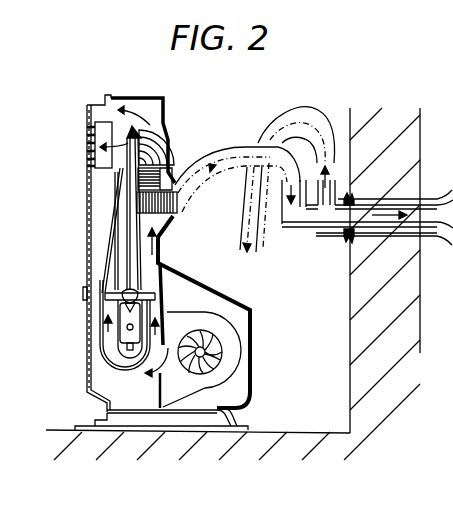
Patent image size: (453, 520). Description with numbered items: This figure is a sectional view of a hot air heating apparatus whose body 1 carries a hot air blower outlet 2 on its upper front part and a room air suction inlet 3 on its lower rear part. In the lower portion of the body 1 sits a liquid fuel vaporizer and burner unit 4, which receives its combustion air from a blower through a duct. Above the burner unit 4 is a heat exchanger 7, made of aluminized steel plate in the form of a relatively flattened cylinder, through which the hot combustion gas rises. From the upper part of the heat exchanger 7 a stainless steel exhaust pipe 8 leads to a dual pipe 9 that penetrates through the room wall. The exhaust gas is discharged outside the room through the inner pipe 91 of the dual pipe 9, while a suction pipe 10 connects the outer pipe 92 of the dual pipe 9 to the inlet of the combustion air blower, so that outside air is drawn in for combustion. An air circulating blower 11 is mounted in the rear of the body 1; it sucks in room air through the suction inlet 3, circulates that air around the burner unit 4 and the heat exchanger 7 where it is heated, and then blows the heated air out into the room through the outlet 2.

The hot air heating apparatus body 1 is at (166, 112).
The hot air blower outlet 2 is at (95, 133).
The room air suction inlet 3 is at (198, 308).
The liquid fuel vaporizer and burner unit 4 is at (120, 343).
The heat exchanger 7 is at (87, 213).
The exhaust pipe 8 is at (173, 187).
The dual pipe 9 is at (345, 236).
The suction pipe 10 is at (260, 250).
The air circulating blower 11 is at (224, 353).
The inner pipe 91 is at (293, 226).
The outer pipe 92 is at (447, 198).